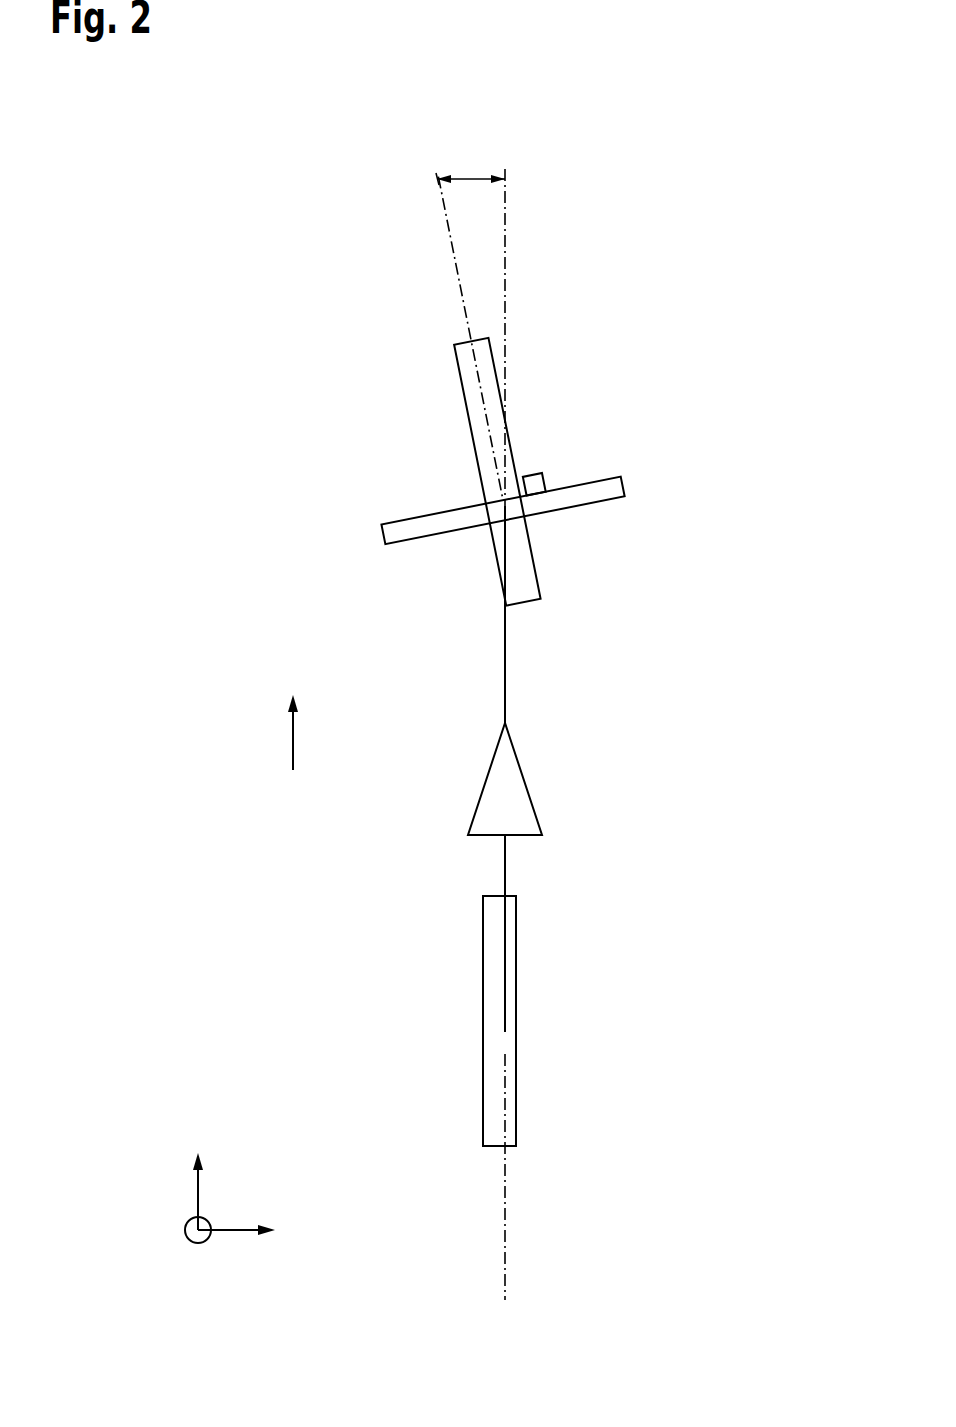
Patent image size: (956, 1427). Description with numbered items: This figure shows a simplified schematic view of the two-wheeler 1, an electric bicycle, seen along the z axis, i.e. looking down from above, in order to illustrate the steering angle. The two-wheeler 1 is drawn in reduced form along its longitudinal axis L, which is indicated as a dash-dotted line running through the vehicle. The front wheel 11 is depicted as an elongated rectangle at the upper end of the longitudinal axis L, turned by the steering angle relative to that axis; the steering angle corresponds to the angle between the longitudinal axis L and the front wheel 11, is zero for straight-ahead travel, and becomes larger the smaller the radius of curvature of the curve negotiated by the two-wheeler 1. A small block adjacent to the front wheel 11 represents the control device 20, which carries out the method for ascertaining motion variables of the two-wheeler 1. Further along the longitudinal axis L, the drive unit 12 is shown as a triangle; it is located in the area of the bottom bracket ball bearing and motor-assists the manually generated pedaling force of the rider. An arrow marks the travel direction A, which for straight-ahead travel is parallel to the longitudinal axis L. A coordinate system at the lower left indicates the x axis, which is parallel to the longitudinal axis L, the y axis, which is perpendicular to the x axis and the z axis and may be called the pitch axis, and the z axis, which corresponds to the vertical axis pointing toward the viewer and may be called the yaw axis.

The two-wheeler 1 is at (622, 609).
The front wheel 11 is at (475, 419).
The drive unit 12 is at (512, 792).
The control device 20 is at (545, 475).
The longitudinal axis L is at (505, 1237).
The travel direction A is at (293, 741).
The x axis x is at (198, 1190).
The y axis y is at (228, 1230).
The z axis z is at (192, 1240).